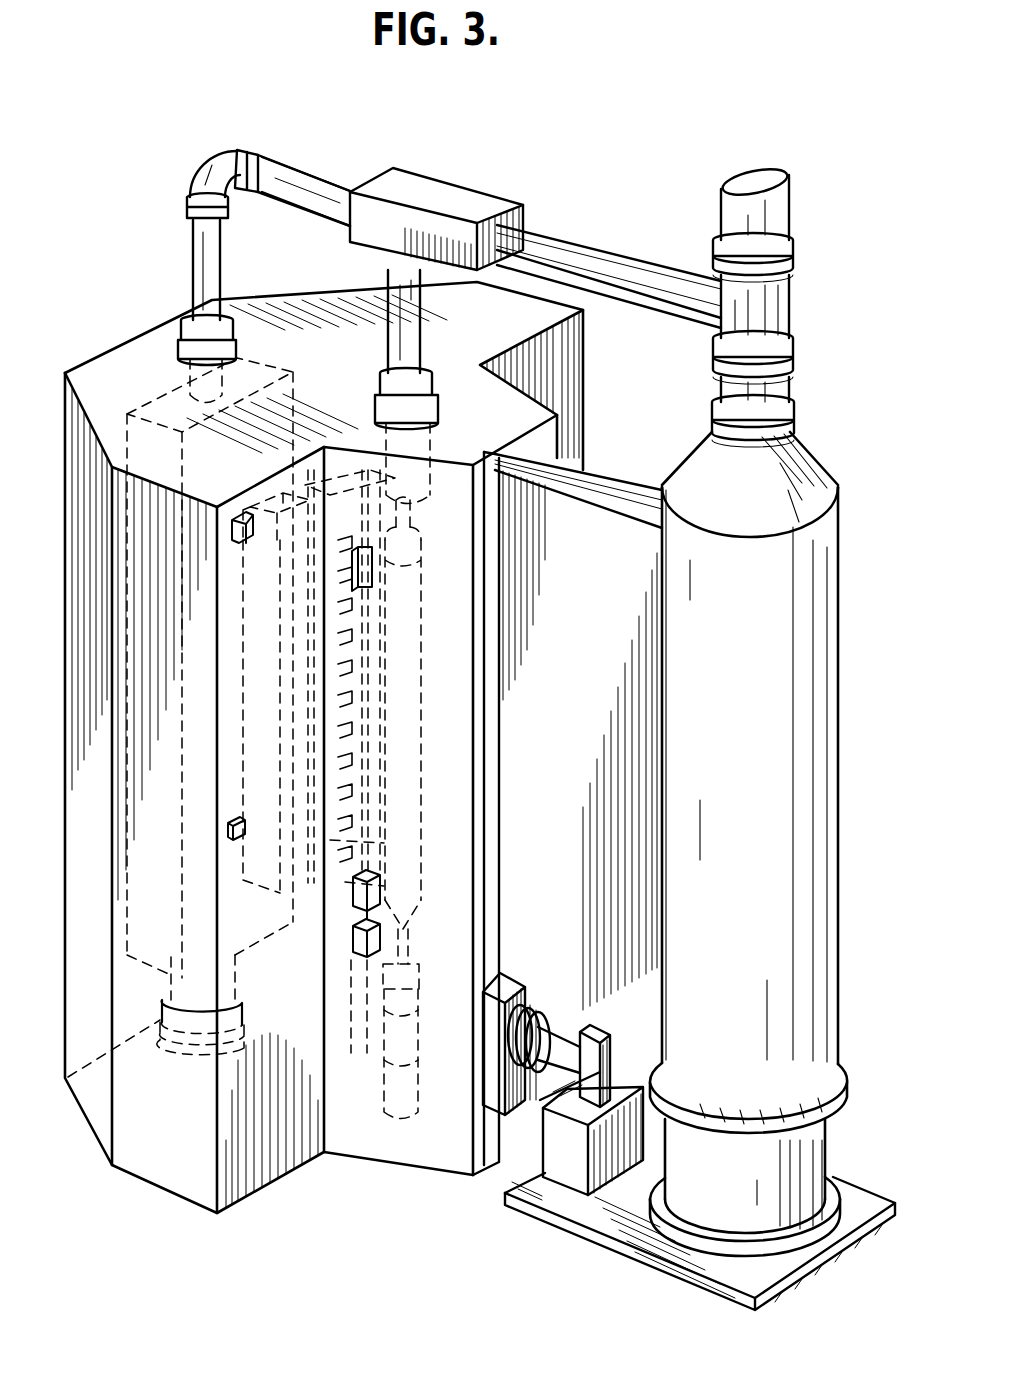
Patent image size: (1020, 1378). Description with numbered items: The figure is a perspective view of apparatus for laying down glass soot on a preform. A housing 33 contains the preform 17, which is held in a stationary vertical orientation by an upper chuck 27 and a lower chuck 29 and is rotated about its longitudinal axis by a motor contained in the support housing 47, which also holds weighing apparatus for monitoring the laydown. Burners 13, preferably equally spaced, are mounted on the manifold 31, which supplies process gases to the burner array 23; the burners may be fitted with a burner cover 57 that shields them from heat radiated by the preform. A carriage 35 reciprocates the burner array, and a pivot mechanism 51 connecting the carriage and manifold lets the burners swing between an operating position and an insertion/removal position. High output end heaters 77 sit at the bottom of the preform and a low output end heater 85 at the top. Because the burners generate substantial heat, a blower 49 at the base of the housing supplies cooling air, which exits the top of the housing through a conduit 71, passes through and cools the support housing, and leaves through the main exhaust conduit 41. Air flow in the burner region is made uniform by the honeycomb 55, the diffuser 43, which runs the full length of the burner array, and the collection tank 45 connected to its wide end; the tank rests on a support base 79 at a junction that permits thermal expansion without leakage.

The burners 13 is at (343, 647).
The preform 17 is at (406, 886).
The burner array 23 is at (339, 880).
The upper chuck 27 is at (413, 443).
The lower chuck 29 is at (423, 1063).
The manifold 31 is at (312, 470).
The housing 33 is at (190, 1173).
The carriage 35 is at (155, 930).
The main exhaust conduit 41 is at (773, 210).
The diffuser 43 is at (603, 697).
The collection tank 45 is at (773, 721).
The support housing 47 is at (440, 205).
The blower 49 is at (580, 1167).
The pivot mechanism 51 is at (240, 490).
The honeycomb 55 is at (267, 858).
The burner cover 57 is at (367, 835).
The conduit 71 is at (203, 258).
The high output end heaters 77 is at (355, 1022).
The support base 79 is at (721, 1209).
The low output end heater 85 is at (360, 578).